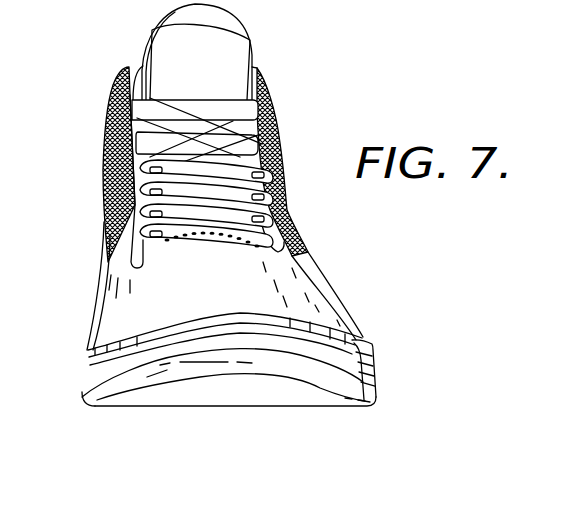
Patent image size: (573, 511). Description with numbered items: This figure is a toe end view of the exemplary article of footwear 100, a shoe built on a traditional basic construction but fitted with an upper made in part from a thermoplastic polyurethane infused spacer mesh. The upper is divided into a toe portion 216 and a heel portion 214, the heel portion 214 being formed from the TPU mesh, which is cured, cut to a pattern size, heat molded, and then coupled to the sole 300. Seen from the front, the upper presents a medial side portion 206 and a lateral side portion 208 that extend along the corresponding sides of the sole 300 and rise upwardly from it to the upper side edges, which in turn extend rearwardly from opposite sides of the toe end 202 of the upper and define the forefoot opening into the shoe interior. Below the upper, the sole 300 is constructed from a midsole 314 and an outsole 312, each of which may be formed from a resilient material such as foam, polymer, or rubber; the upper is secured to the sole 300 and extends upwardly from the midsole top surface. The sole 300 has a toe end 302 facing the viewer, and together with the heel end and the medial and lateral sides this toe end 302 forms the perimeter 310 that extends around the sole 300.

The article of footwear 100 is at (84, 61).
The toe end of the upper 202 is at (204, 303).
The medial side portion 206 is at (106, 211).
The lateral side portion 208 is at (289, 202).
The heel portion 214 is at (312, 153).
The toe portion 216 is at (337, 265).
The sole 300 is at (378, 393).
The toe end of the sole 302 is at (207, 366).
The perimeter 310 is at (374, 330).
The outsole 312 is at (183, 407).
The midsole 314 is at (98, 389).